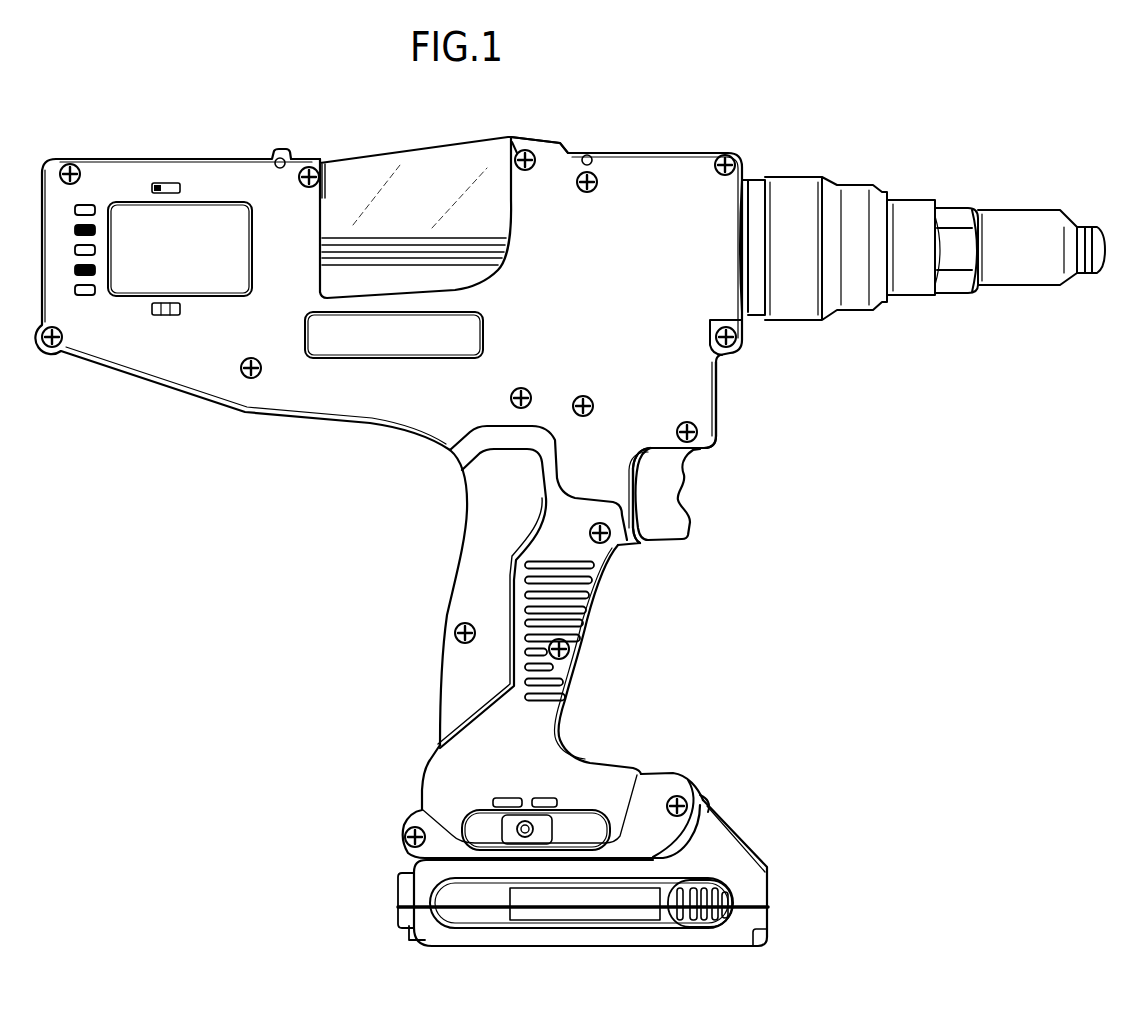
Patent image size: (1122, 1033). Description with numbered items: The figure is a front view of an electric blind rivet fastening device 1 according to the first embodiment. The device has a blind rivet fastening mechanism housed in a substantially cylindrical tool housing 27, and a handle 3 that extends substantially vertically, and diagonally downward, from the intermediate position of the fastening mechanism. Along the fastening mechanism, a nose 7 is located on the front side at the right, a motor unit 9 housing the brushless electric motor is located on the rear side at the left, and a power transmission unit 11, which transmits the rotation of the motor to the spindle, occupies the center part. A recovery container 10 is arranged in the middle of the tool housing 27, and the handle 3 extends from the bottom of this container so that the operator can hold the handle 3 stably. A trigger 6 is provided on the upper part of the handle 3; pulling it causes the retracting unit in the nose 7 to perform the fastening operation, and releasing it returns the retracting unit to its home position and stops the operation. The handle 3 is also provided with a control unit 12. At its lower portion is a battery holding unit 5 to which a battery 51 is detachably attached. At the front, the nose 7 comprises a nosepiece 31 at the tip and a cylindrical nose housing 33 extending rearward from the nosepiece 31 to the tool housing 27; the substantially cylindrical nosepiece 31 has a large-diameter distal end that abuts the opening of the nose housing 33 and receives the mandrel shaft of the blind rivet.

The electric blind rivet fastening device 1 is at (773, 633).
The handle 3 is at (462, 611).
The battery holding unit 5 is at (445, 777).
The trigger 6 is at (683, 512).
The nose 7 is at (1063, 110).
The motor unit 9 is at (207, 143).
The recovery container 10 is at (463, 200).
The power transmission unit 11 is at (560, 134).
The control unit 12 is at (503, 517).
The tool housing 27 is at (665, 357).
The nosepiece 31 is at (1097, 232).
The nose housing 33 is at (908, 227).
The battery 51 is at (722, 848).